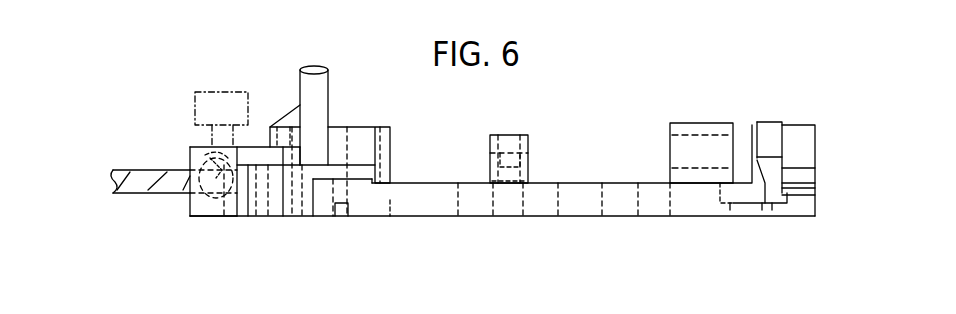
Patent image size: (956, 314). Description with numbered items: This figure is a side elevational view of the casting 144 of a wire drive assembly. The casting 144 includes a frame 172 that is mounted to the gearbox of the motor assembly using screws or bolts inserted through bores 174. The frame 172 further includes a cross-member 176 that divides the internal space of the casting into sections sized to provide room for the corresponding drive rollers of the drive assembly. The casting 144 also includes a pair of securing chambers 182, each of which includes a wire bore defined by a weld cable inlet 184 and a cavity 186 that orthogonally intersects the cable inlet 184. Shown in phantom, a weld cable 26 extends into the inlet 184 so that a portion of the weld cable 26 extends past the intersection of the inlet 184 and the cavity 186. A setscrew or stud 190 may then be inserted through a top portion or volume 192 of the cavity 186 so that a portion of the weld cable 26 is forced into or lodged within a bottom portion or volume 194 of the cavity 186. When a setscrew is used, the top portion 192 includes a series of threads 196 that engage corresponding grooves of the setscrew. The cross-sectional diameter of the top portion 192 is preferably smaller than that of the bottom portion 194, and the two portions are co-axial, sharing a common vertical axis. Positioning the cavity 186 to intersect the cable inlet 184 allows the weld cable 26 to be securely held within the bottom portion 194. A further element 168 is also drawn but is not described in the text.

The weld cable 26 is at (163, 190).
The casting 144 is at (612, 107).
The support bracket 168 is at (240, 142).
The frame 172 is at (390, 200).
The bore 174 is at (268, 217).
The cross-member 176 is at (317, 108).
The securing chamber 182 is at (210, 227).
The weld cable inlet 184 is at (188, 148).
The cavity 186 is at (222, 140).
The setscrew or stud 190 is at (215, 92).
The top portion of cavity 192 is at (207, 145).
The bottom portion of cavity 194 is at (227, 220).
The threads 196 is at (197, 145).